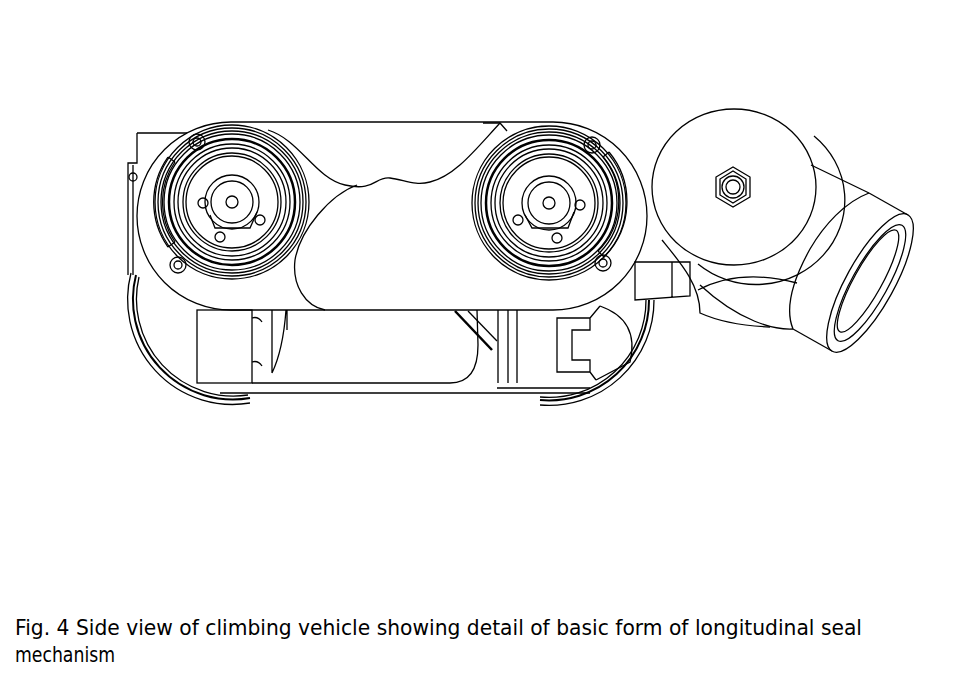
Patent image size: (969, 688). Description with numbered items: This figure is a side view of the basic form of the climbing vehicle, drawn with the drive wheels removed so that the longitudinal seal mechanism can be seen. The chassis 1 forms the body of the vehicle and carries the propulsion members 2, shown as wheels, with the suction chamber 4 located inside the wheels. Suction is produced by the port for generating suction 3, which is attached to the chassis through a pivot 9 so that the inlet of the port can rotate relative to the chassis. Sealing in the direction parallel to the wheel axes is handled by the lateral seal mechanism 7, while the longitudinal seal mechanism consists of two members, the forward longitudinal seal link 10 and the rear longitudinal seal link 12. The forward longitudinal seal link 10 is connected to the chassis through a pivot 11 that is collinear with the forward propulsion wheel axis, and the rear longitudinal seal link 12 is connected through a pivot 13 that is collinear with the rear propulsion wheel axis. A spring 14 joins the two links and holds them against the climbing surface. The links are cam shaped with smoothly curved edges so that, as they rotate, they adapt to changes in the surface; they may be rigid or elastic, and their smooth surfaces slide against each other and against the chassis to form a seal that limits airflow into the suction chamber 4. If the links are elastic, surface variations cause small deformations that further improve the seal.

The chassis 1 is at (392, 110).
The propulsion members 2 is at (209, 401).
The port for generating suction 3 is at (871, 294).
The suction chamber 4 is at (437, 344).
The lateral seal mechanism 7 is at (198, 333).
The pivot 9 is at (733, 126).
The forward longitudinal seal link 10 is at (295, 312).
The pivot 11 is at (227, 183).
The rear longitudinal seal link 12 is at (527, 306).
The pivot 13 is at (552, 180).
The spring 14 is at (252, 142).